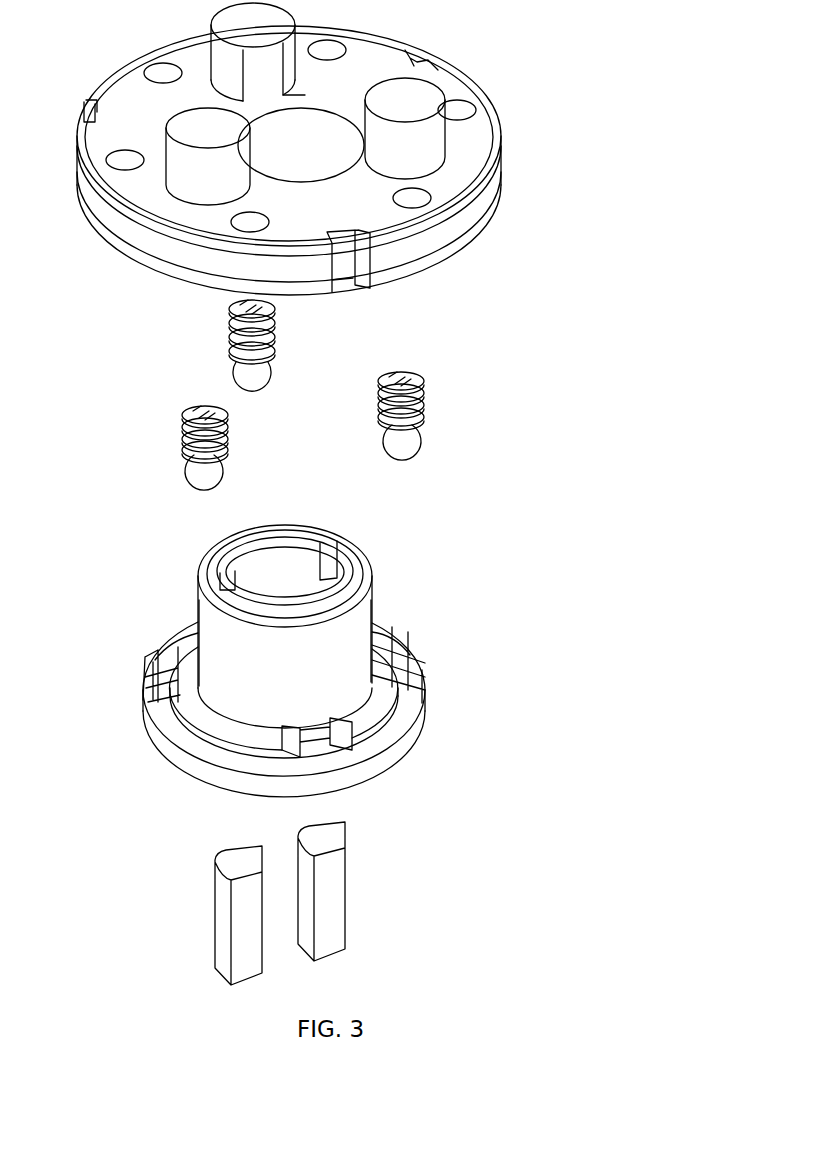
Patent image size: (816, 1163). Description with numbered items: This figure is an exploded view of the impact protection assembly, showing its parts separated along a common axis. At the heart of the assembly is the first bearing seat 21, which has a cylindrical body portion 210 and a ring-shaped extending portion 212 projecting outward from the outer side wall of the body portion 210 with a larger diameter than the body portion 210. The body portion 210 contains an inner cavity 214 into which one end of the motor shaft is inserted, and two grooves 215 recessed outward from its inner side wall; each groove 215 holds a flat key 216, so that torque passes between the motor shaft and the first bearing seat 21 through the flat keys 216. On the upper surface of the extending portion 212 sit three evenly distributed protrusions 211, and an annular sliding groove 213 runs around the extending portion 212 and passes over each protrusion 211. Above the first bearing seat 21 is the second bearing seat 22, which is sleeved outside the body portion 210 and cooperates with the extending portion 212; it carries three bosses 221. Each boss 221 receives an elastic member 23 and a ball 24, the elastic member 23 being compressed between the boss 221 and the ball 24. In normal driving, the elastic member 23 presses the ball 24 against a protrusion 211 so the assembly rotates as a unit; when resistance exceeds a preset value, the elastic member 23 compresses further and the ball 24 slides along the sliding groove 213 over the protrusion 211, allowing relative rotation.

The second bearing seat 22 is at (465, 146).
The boss 221 is at (407, 140).
The elastic member 23 is at (413, 403).
The ball 24 is at (402, 443).
The first bearing seat 21 is at (303, 660).
The inner cavity 214 is at (270, 577).
The groove 215 is at (347, 548).
The body portion 210 is at (338, 658).
The protrusion 211 is at (316, 738).
The extending portion 212 is at (163, 727).
The sliding groove 213 is at (397, 700).
The flat key 216 is at (243, 917).